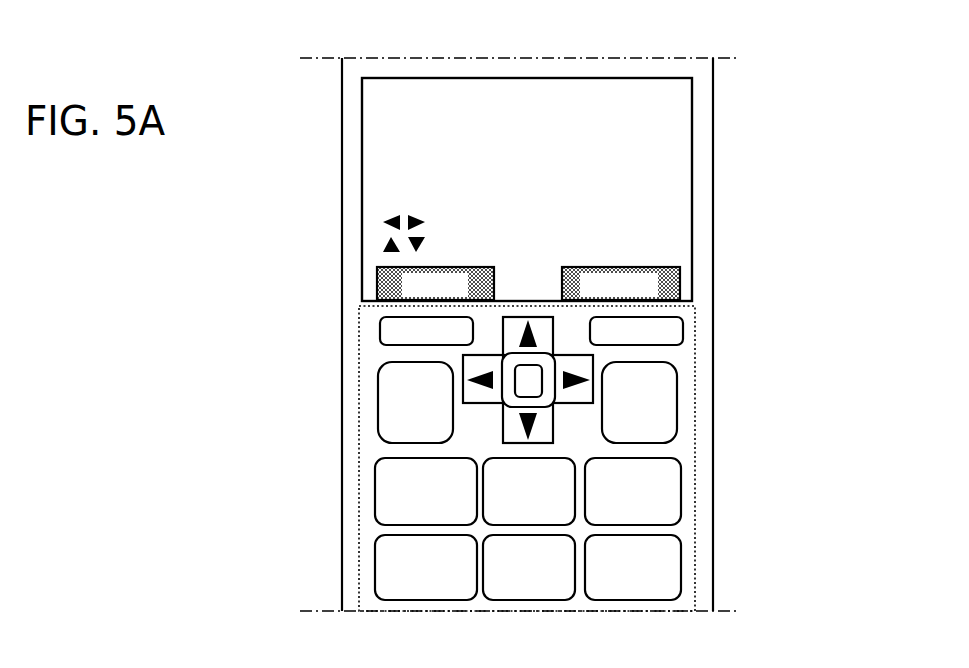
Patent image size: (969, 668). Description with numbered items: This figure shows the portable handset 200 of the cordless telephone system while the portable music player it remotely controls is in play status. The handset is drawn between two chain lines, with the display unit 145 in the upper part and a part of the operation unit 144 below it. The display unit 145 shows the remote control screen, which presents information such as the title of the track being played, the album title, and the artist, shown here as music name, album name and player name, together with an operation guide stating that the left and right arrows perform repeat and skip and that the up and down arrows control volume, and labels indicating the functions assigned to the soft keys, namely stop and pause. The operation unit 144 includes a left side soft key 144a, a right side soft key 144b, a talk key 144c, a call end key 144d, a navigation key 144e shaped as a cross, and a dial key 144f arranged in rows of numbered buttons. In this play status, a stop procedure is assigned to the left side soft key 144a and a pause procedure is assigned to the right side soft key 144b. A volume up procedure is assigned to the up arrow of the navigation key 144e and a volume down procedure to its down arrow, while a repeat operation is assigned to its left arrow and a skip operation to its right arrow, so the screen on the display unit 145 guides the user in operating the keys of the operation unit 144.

The portable handset 200 is at (538, 48).
The display unit 145 is at (672, 190).
The operation unit 144 is at (695, 375).
The left side soft key 144a is at (380, 322).
The right side soft key 144b is at (683, 318).
The talk key 144c is at (378, 380).
The call end key 144d is at (677, 415).
The navigation key 144e is at (507, 396).
The dial key 144f is at (680, 503).